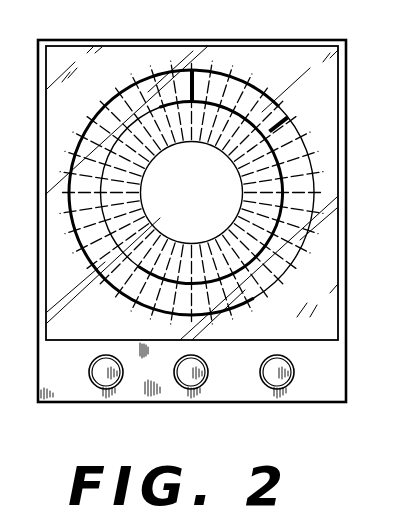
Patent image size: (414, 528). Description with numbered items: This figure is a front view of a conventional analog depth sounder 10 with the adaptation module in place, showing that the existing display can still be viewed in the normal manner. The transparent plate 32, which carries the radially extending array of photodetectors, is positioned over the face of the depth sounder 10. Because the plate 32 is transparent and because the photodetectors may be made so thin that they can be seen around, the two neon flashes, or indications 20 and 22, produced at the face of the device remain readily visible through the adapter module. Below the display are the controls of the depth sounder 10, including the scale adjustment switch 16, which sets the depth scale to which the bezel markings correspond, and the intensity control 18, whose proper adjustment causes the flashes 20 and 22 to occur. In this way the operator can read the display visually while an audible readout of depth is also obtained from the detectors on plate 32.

The depth sounder 10 is at (214, 40).
The scale adjustment switch 16 is at (102, 391).
The intensity control 18 is at (275, 391).
The flash 20 is at (176, 88).
The flash 22 is at (284, 128).
The plate 32 is at (330, 178).